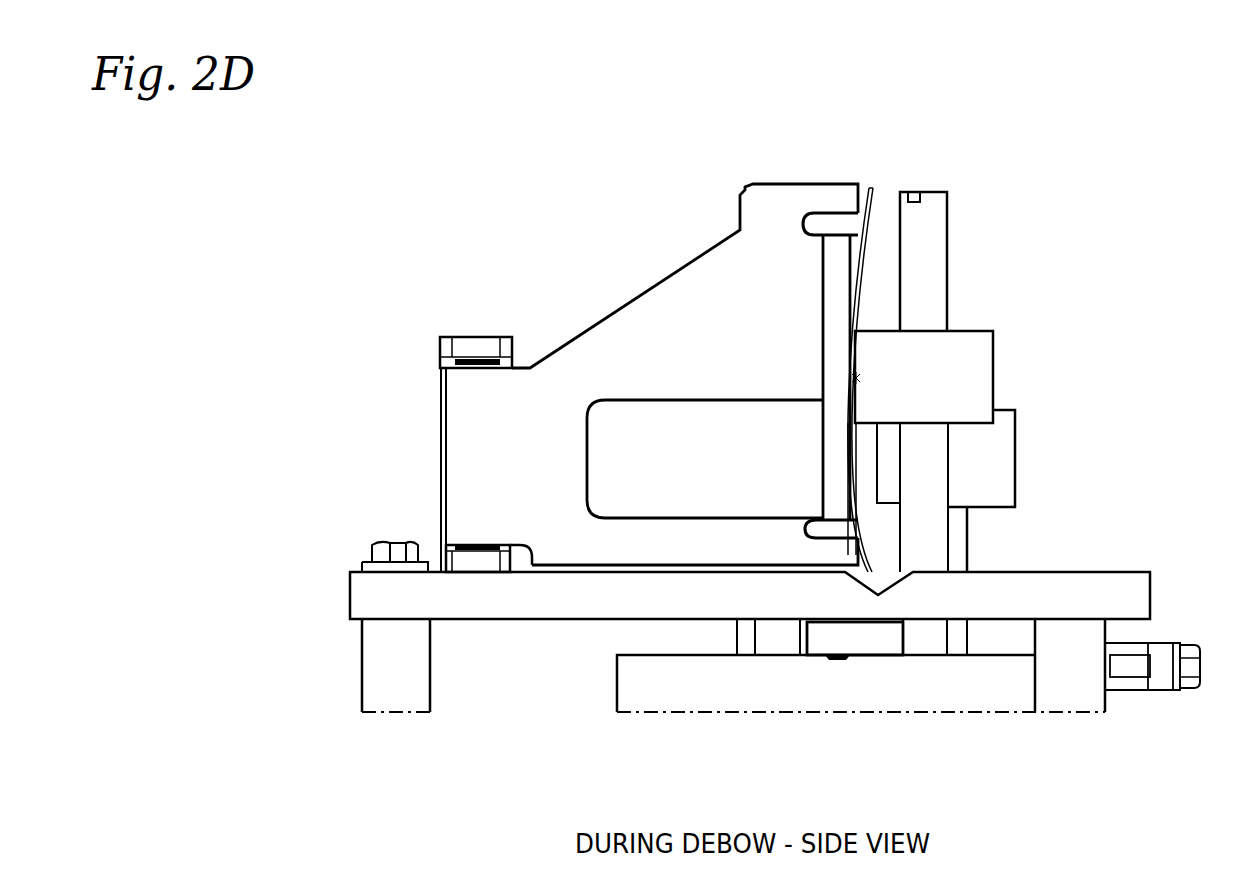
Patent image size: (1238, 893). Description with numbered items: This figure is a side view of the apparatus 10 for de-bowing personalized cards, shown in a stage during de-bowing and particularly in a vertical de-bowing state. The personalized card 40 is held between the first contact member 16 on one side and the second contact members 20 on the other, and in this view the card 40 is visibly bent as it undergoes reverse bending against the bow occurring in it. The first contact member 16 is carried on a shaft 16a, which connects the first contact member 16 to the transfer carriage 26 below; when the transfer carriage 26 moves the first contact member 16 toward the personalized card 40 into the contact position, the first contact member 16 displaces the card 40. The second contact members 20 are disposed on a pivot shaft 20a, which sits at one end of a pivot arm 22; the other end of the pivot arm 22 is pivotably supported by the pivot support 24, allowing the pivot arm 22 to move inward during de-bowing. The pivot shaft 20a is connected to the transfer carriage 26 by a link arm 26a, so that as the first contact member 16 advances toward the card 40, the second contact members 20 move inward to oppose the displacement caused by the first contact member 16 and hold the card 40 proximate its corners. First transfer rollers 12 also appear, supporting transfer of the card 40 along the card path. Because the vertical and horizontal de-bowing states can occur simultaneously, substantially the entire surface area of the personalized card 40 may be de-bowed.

The apparatus 10 is at (416, 157).
The first transfer rollers 12 is at (1015, 463).
The first contact member 16 is at (993, 375).
The shaft 16a is at (947, 215).
The second contact members 20 is at (812, 215).
The pivot shaft 20a is at (850, 493).
The pivot arm 22 is at (441, 460).
The pivot support 24 is at (448, 350).
The transfer carriage 26 is at (617, 683).
The link arm 26a is at (800, 635).
The personalized card 40 is at (865, 255).